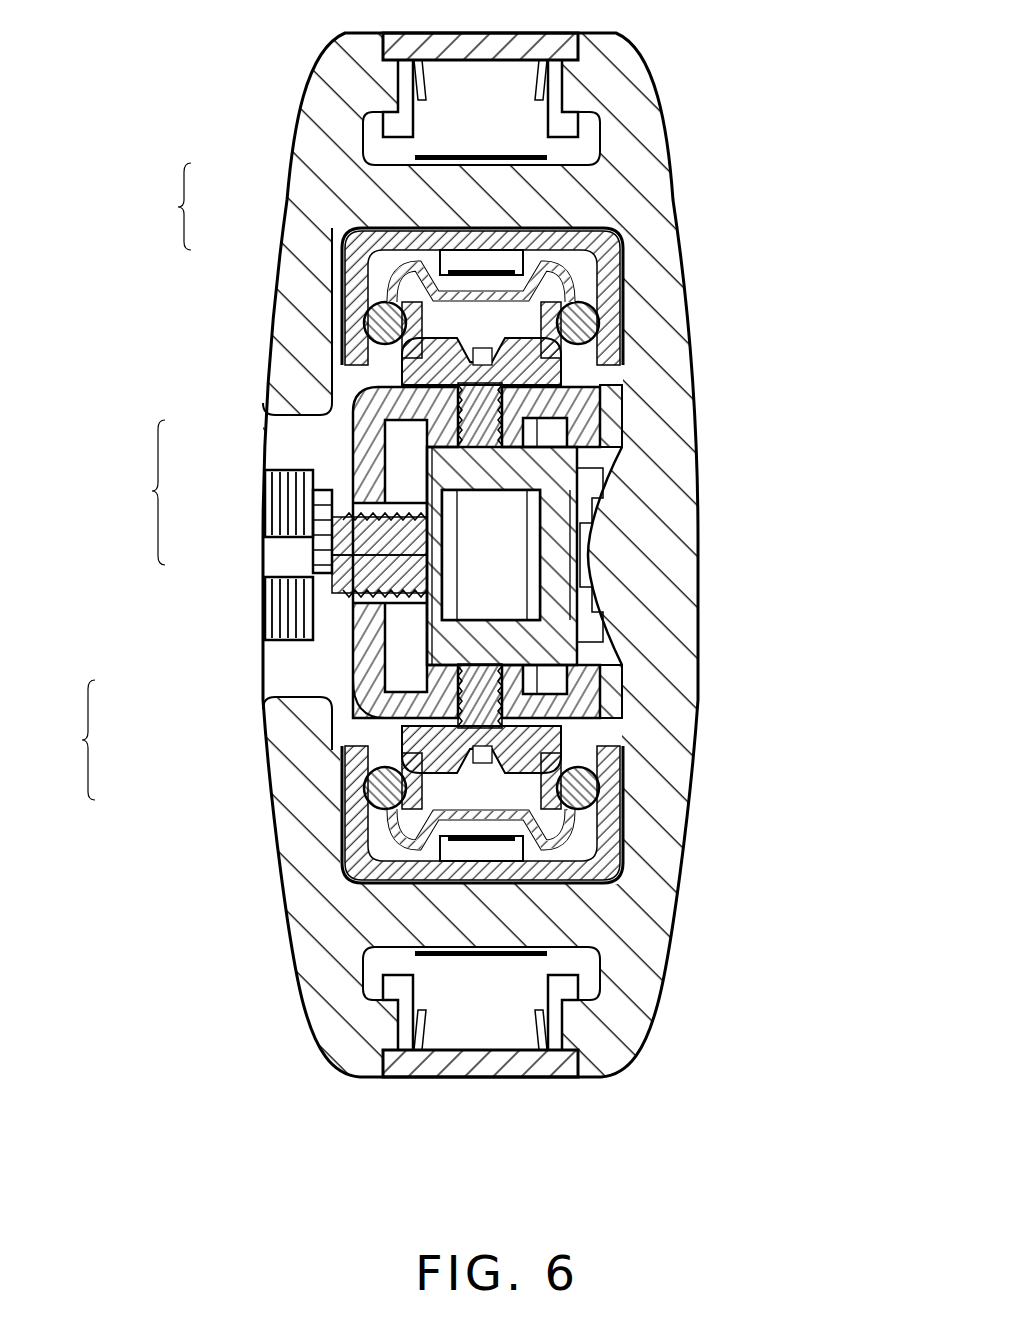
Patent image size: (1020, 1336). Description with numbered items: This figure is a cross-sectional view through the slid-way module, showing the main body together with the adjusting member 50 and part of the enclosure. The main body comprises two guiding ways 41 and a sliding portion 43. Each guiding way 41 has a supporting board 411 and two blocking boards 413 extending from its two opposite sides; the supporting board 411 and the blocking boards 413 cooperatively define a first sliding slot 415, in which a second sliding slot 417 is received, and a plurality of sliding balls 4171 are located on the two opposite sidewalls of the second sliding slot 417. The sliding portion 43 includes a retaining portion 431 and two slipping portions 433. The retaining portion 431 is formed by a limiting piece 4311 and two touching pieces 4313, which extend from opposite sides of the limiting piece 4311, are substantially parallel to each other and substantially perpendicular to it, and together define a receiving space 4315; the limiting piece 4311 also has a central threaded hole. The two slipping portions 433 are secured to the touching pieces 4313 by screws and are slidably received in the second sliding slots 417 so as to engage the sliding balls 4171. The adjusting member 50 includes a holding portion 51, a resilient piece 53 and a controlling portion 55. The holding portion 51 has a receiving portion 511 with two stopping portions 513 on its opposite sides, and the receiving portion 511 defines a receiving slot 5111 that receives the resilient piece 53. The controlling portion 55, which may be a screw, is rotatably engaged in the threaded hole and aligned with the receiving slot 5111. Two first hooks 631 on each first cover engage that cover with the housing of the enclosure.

The guiding way 41 is at (165, 206).
The supporting board 411 is at (335, 192).
The blocking board 413 is at (348, 252).
The first sliding slot 415 is at (490, 275).
The second sliding slot 417 is at (570, 287).
The sliding ball 4171 is at (520, 325).
The sliding portion 43 is at (66, 740).
The retaining portion 431 is at (170, 632).
The limiting piece 4311 is at (350, 648).
The touching piece 4313 is at (380, 712).
The slipping portion 433 is at (385, 750).
The receiving space 4315 is at (600, 800).
The adjusting member 50 is at (135, 492).
The holding portion 51 is at (400, 432).
The receiving portion 511 is at (505, 640).
The receiving slot 5111 is at (500, 543).
The stopping portion 513 is at (585, 710).
The resilient piece 53 is at (330, 560).
The controlling portion 55 is at (262, 477).
The first hook 631 is at (573, 123).